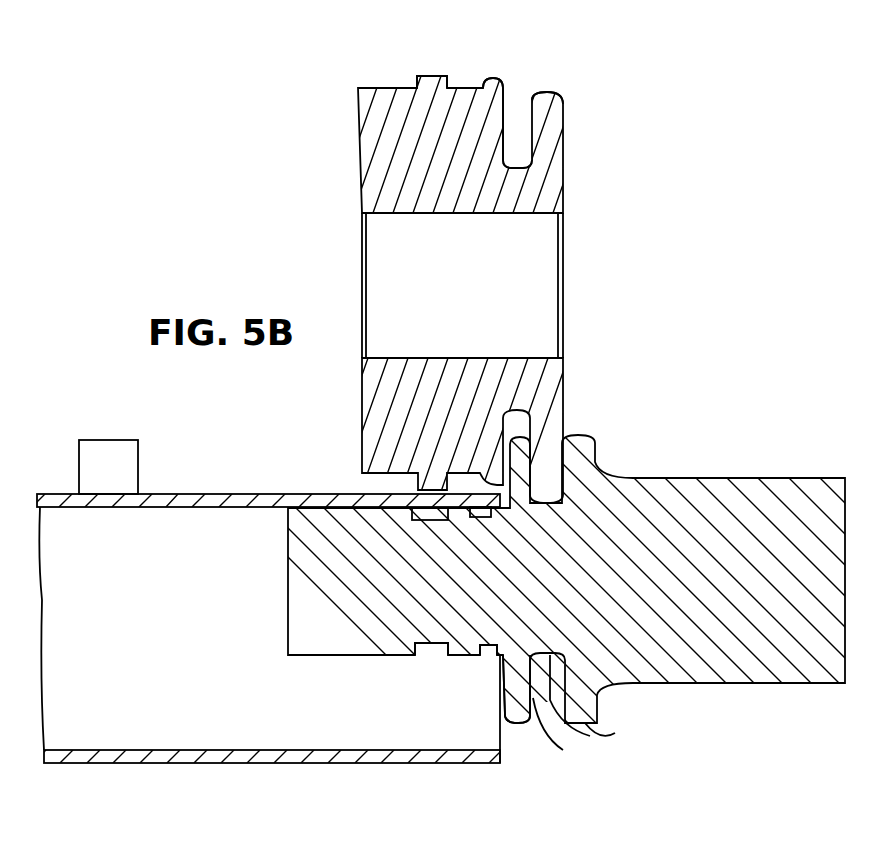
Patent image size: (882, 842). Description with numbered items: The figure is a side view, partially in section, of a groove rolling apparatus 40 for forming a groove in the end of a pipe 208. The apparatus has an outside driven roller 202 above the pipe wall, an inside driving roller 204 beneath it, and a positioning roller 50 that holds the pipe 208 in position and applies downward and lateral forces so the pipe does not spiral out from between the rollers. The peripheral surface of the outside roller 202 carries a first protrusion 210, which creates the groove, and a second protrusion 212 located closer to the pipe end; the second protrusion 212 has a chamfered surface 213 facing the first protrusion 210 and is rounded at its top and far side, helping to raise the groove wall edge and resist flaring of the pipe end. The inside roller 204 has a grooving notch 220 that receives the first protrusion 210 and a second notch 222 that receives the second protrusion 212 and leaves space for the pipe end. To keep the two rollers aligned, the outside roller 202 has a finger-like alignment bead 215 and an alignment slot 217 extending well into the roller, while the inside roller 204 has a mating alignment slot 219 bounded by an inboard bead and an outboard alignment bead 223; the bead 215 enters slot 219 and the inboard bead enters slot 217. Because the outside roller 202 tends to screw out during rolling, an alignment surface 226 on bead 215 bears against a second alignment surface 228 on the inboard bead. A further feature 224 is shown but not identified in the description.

The groove rolling apparatus 40 is at (608, 270).
The positioning roller 50 is at (77, 448).
The outside roller 202 is at (362, 183).
The inside roller 204 is at (675, 478).
The pipe 208 is at (197, 763).
The first protrusion 210 is at (428, 76).
The second protrusion 212 is at (503, 110).
The chamfered surface 213 is at (483, 80).
The alignment bead 215 is at (547, 88).
The alignment slot 217 is at (513, 132).
The mating alignment slot 219 is at (590, 736).
The grooving notch 220 is at (432, 648).
The second notch 222 is at (488, 650).
The outboard alignment bead 223 is at (615, 733).
The finger 224 is at (520, 722).
The alignment surface 226 is at (525, 100).
The second alignment surface 228 is at (563, 750).